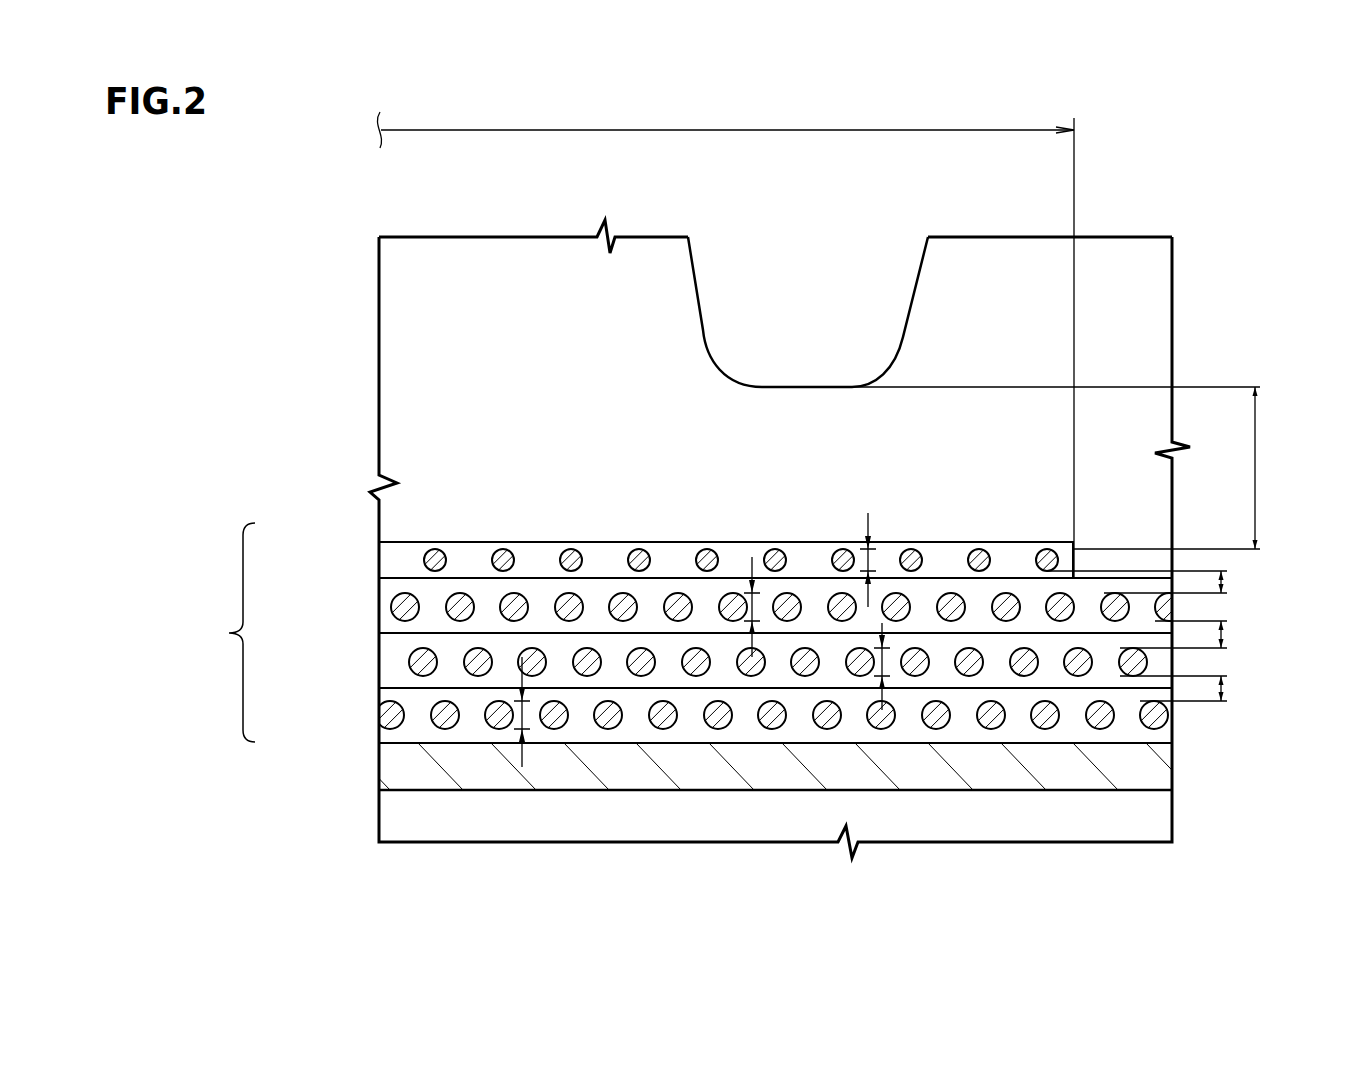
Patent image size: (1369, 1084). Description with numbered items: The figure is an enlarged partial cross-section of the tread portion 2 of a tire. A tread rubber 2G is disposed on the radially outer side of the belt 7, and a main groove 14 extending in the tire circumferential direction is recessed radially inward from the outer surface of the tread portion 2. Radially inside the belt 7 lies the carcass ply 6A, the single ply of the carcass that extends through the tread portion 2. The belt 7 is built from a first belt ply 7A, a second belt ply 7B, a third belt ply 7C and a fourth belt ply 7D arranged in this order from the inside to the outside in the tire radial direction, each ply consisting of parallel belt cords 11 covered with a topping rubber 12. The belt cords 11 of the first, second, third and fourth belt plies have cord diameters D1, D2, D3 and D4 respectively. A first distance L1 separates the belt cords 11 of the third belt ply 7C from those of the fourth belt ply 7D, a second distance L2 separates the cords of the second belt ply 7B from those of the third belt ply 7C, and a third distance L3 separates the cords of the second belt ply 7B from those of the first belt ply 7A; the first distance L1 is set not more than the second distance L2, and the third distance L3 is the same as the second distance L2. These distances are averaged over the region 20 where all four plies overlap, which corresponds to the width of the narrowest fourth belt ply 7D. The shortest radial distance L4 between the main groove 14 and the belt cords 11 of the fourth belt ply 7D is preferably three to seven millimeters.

The tread portion 2 is at (1138, 200).
The tread rubber 2G is at (482, 390).
The main groove 14 is at (798, 295).
The region 20 is at (725, 337).
The belt 7 is at (690, 632).
The first belt ply 7A is at (420, 713).
The second belt ply 7B is at (398, 663).
The third belt ply 7C is at (432, 608).
The fourth belt ply 7D is at (402, 561).
The belt cord 11 is at (613, 719).
The topping rubber 12 is at (745, 724).
The carcass ply 6A is at (412, 768).
The cord diameter D1 is at (525, 714).
The cord diameter D2 is at (883, 660).
The cord diameter D3 is at (753, 607).
The cord diameter D4 is at (870, 560).
The first distance L1 is at (1158, 582).
The second distance L2 is at (1194, 637).
The third distance L3 is at (1194, 690).
The shortest distance L4 is at (1075, 468).